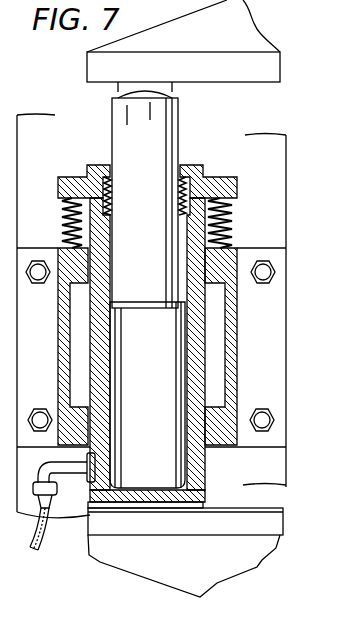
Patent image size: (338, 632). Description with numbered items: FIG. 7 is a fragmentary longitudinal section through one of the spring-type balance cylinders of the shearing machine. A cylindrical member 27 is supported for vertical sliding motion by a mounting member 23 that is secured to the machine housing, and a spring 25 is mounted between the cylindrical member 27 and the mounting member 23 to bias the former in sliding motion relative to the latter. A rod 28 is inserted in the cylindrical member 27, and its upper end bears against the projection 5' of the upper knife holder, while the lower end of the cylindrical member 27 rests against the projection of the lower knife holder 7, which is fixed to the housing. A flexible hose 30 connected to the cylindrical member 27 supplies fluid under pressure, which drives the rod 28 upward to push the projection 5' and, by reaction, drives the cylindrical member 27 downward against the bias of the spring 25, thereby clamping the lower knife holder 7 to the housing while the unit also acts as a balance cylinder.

The projection 5' is at (195, 41).
The lower knife holder 7 is at (262, 550).
The mounting member 23 is at (275, 333).
The spring 25 is at (62, 220).
The cylindrical member 27 is at (198, 373).
The rod 28 is at (178, 118).
The flexible hose 30 is at (50, 540).